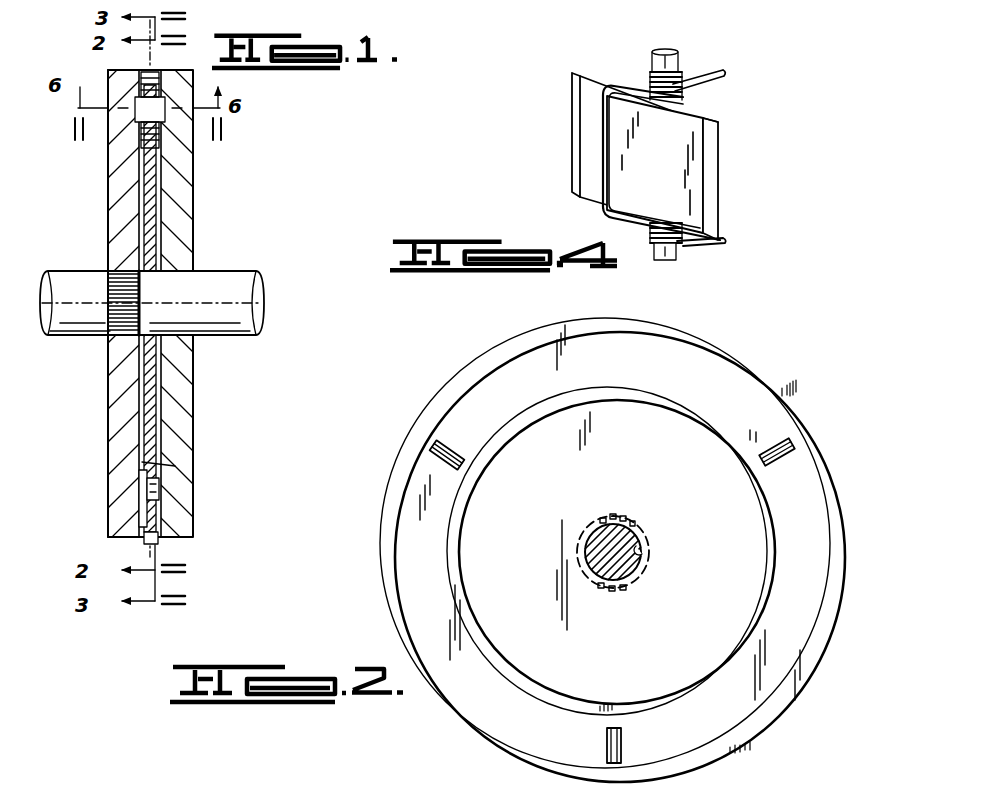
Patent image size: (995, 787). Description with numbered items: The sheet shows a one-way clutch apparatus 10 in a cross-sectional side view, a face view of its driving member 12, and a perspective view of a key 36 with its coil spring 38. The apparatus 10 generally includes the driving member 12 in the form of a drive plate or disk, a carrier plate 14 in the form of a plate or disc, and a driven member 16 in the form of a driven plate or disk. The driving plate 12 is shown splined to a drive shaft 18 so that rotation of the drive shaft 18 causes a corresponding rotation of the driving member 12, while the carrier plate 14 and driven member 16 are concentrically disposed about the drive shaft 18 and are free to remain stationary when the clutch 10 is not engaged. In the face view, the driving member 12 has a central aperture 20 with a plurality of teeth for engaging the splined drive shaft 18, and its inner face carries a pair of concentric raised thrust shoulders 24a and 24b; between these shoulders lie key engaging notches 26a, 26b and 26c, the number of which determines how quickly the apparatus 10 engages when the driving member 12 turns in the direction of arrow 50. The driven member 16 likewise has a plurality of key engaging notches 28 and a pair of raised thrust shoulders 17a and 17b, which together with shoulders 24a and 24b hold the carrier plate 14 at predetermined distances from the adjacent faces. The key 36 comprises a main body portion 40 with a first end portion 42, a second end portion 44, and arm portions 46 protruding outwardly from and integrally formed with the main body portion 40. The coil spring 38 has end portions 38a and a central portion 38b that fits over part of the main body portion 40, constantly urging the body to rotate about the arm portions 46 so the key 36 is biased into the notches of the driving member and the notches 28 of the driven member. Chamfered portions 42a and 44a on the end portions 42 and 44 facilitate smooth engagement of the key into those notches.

In FIG. 1, the one-way clutch apparatus 10 is at (268, 240).
In FIG. 1, the driving member 12 is at (105, 185).
In FIG. 2, the driving member 12 is at (490, 580).
In FIG. 1, the carrier plate 14 is at (145, 205).
In FIG. 2, the carrier plate 14 is at (786, 786).
In FIG. 1, the driven member 16 is at (198, 212).
In FIG. 1, the raised thrust shoulder 17a is at (160, 463).
In FIG. 1, the raised thrust shoulder 17b is at (152, 544).
In FIG. 1, the drive shaft 18 is at (74, 278).
In FIG. 2, the drive shaft 18 is at (597, 540).
In FIG. 2, the aperture 20 is at (642, 558).
In FIG. 2, the raised thrust shoulder 24a is at (750, 648).
In FIG. 2, the raised thrust shoulder 24b is at (797, 692).
In FIG. 2, the key engaging notch 26a is at (775, 445).
In FIG. 2, the key engaging notch 26b is at (432, 450).
In FIG. 1, the key engaging notch 26c is at (146, 498).
In FIG. 2, the key engaging notch 26c is at (622, 745).
In FIG. 1, the key engaging notch 28 is at (160, 488).
In FIG. 4, the key 36 is at (548, 73).
In FIG. 4, the coil spring 38 is at (705, 93).
In FIG. 4, the end portion 38a is at (708, 70).
In FIG. 4, the central portion 38b is at (598, 172).
In FIG. 4, the main body portion 40 is at (652, 152).
In FIG. 4, the first end portion 42 is at (590, 137).
In FIG. 4, the chamfered portion 42a is at (572, 105).
In FIG. 4, the second end portion 44 is at (708, 203).
In FIG. 4, the chamfered portion 44a is at (717, 117).
In FIG. 4, the arm portion 46 is at (650, 68).
In FIG. 2, the directional arrow 50 is at (863, 555).